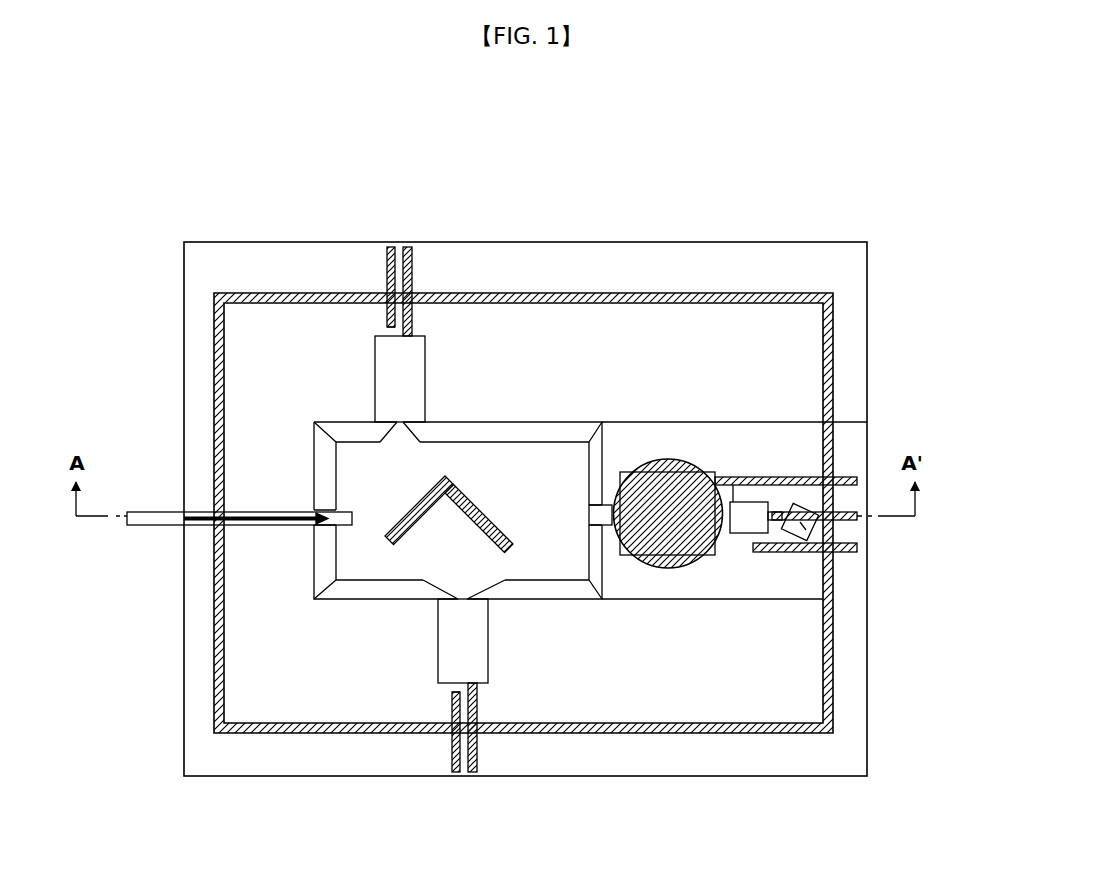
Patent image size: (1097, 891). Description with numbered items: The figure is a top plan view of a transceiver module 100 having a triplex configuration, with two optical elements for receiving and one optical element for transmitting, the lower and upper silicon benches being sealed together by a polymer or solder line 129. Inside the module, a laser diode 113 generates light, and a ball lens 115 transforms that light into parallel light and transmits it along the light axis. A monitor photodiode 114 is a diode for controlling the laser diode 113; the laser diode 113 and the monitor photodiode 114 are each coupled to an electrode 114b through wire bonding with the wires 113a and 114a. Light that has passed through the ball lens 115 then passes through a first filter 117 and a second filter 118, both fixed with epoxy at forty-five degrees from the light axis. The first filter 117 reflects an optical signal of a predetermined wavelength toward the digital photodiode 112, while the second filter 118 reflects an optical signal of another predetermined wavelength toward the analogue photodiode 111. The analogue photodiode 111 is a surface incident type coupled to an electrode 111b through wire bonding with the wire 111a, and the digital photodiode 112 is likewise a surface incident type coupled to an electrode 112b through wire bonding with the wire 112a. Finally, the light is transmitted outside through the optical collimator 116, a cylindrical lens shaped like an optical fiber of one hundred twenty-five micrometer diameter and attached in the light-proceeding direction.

The transceiver module 100 is at (826, 136).
The solder line 129 is at (216, 609).
The first filter 117 is at (467, 498).
The second filter 118 is at (423, 498).
The optical collimator 116 is at (157, 512).
The analogue photodiode 111 is at (378, 363).
The wire 111a is at (388, 318).
The electrode 111b is at (392, 247).
The digital photodiode 112 is at (438, 653).
The wire 112a is at (452, 690).
The electrode 112b is at (461, 774).
The ball lens 115 is at (666, 568).
The laser diode 113 is at (755, 502).
The wire 113a is at (733, 496).
The monitor photodiode 114 is at (820, 548).
The wire 114a is at (790, 543).
The electrode 114b is at (857, 481).